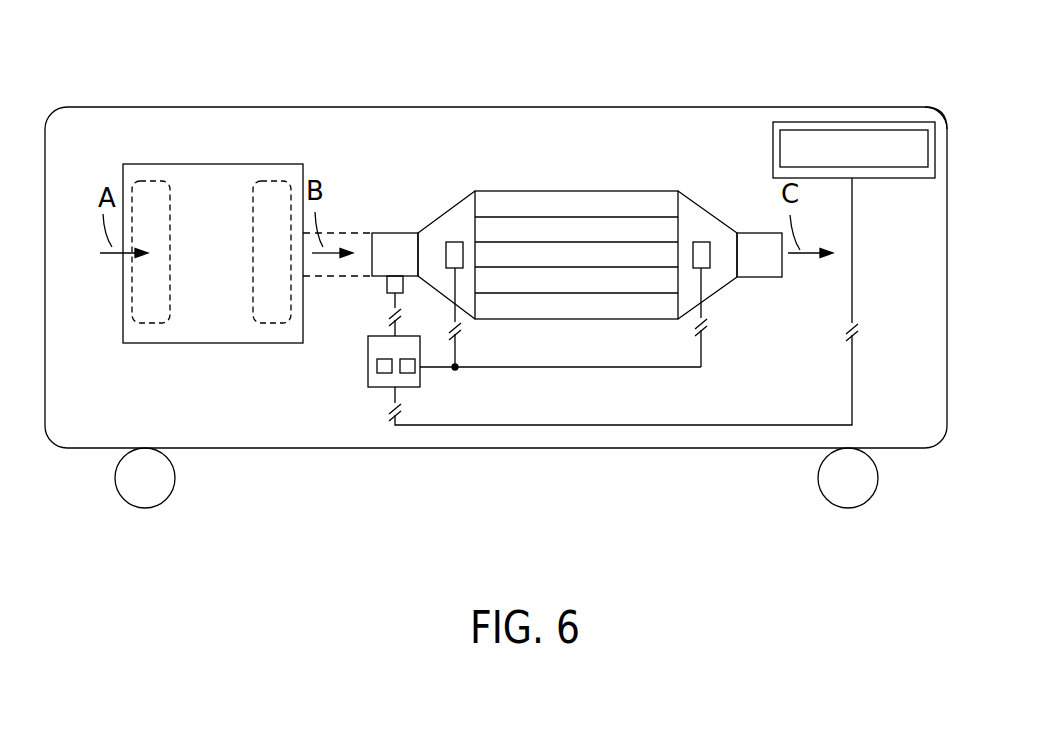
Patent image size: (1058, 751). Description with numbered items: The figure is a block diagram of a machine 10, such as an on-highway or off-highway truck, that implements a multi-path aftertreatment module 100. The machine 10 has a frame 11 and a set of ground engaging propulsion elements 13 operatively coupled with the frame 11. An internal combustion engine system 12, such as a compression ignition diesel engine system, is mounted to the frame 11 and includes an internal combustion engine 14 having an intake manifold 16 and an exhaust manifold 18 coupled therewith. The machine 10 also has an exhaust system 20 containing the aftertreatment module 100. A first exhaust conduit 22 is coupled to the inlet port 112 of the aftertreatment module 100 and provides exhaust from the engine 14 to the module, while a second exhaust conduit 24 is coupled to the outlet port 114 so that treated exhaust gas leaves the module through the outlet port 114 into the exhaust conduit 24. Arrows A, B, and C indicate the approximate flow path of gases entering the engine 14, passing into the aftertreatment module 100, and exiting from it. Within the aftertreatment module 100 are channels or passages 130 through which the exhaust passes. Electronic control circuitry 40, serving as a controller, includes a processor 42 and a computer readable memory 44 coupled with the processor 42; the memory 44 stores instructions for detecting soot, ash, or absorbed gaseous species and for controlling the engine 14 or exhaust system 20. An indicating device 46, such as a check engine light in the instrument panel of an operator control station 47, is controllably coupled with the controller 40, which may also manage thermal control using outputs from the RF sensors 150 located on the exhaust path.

The machine 10 is at (285, 487).
The frame 11 is at (938, 112).
The internal combustion engine system 12 is at (230, 243).
The ground engaging propulsion elements 13 is at (880, 477).
The internal combustion engine 14 is at (212, 343).
The intake manifold 16 is at (148, 326).
The exhaust manifold 18 is at (268, 326).
The exhaust system 20 is at (547, 258).
The first exhaust conduit 22 is at (388, 231).
The second exhaust conduit 24 is at (760, 268).
The electronic control circuitry 40 is at (399, 373).
The processor 42 is at (368, 362).
The computer readable memory 44 is at (405, 357).
The indicating device 46 is at (887, 167).
The operator control station 47 is at (905, 122).
The aftertreatment module 100 is at (598, 189).
The inlet port 112 is at (418, 232).
The outlet port 114 is at (738, 232).
The catalyst substrate channels 130 is at (566, 255).
The RF sensors 150 is at (455, 240).